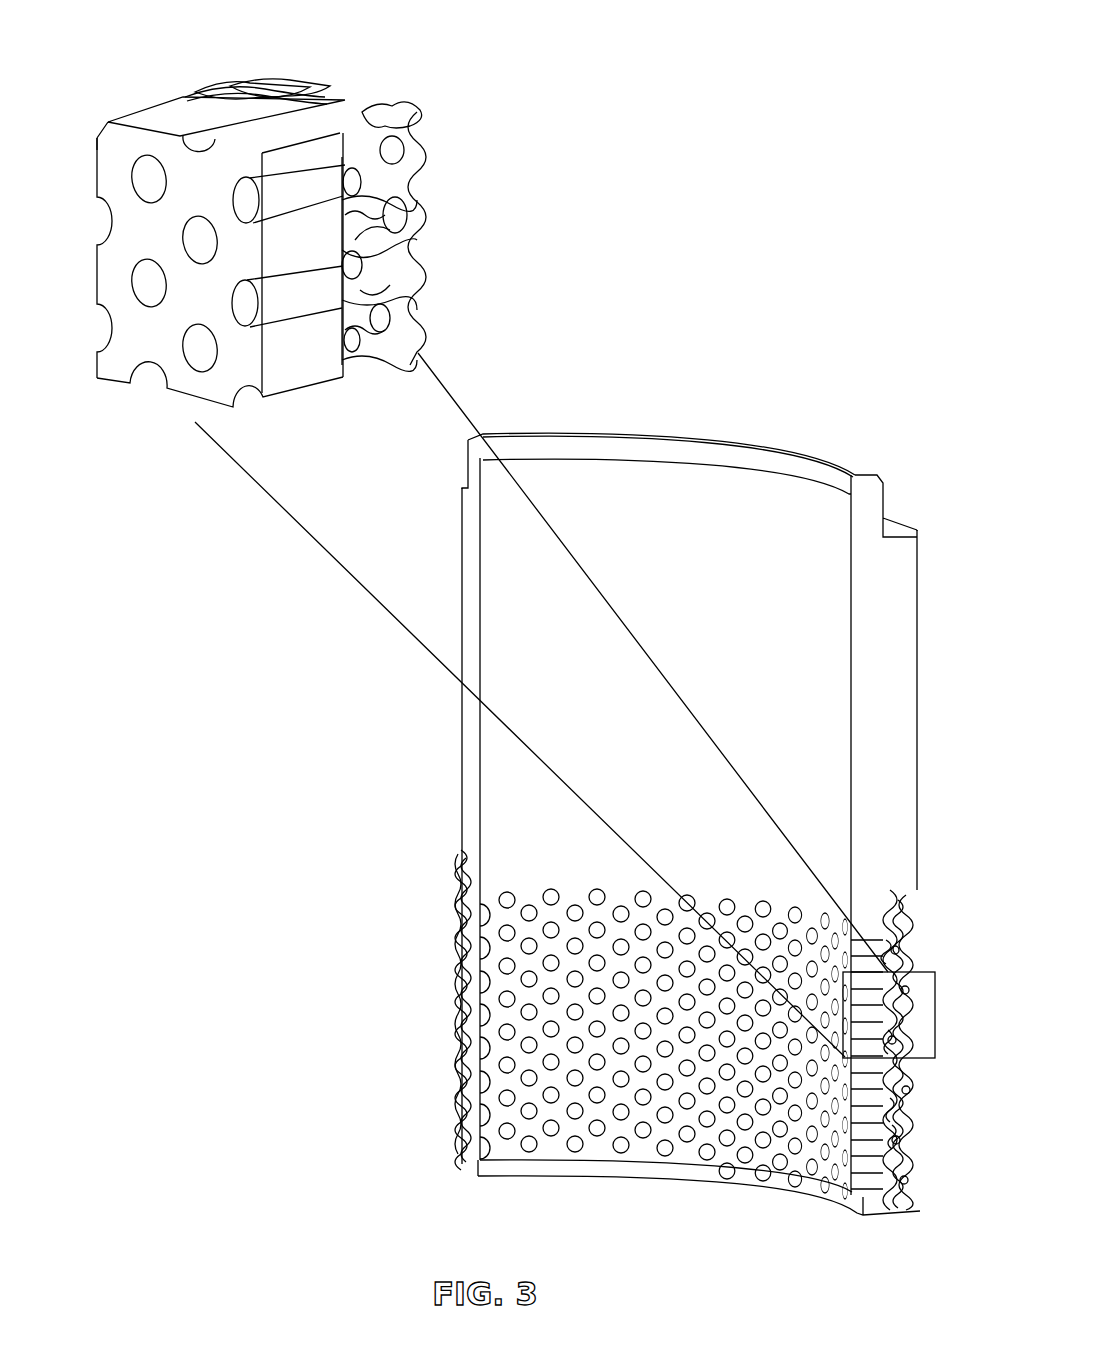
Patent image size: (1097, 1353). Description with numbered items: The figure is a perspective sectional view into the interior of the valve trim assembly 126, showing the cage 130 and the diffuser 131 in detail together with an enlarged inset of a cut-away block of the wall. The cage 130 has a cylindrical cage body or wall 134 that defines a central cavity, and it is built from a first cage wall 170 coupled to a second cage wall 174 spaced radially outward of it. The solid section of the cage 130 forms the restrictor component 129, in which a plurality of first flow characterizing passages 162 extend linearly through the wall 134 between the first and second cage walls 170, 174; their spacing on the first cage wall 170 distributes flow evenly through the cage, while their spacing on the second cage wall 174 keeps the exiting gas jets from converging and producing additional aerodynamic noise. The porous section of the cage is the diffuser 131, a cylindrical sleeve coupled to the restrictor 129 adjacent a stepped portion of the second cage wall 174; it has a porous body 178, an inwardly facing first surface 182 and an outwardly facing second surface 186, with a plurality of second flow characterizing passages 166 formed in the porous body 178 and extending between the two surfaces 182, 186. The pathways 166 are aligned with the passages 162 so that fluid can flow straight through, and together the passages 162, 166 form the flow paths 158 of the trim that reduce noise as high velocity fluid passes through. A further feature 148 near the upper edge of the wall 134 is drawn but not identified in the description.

The valve trim assembly 126 is at (785, 363).
The restrictor component 129 is at (97, 275).
The cage 130 is at (303, 358).
The diffuser 131 is at (410, 213).
The cage body or wall 134 is at (113, 368).
The notch 148 is at (872, 503).
The flow paths 158 is at (922, 947).
The first flow characterizing passages 162 is at (142, 167).
The second flow characterizing passages 166 is at (413, 162).
The first cage wall 170 is at (105, 178).
The second cage wall 174 is at (187, 93).
The porous body 178 is at (374, 110).
The first surface 182 is at (198, 90).
The second surface 186 is at (293, 87).